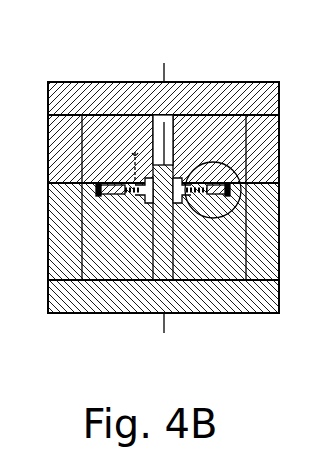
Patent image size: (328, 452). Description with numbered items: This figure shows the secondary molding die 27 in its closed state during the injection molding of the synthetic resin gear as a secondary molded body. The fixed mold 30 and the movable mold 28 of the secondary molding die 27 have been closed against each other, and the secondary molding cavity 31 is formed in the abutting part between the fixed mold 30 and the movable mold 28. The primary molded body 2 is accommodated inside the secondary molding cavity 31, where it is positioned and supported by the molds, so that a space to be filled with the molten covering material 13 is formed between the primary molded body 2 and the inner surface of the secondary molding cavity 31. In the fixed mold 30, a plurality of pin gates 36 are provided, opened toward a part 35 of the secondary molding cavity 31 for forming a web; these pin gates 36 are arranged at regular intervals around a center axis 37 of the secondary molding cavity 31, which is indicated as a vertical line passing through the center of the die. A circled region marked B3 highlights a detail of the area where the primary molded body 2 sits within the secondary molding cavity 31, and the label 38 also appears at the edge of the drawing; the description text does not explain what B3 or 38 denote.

The secondary molding die 27 is at (246, 79).
The movable mold 28 is at (280, 294).
The fixed mold 30 is at (280, 164).
The primary molded body 2 is at (108, 196).
The secondary molding cavity 31 is at (97, 184).
The part of the secondary molding cavity for forming a web 35 is at (125, 197).
The pin gate 36 is at (133, 165).
The center axis 37 is at (166, 72).
The bolt detail B3 is at (205, 216).
The lower side block 38 is at (3, 255).
The covering material 13 is at (323, 222).